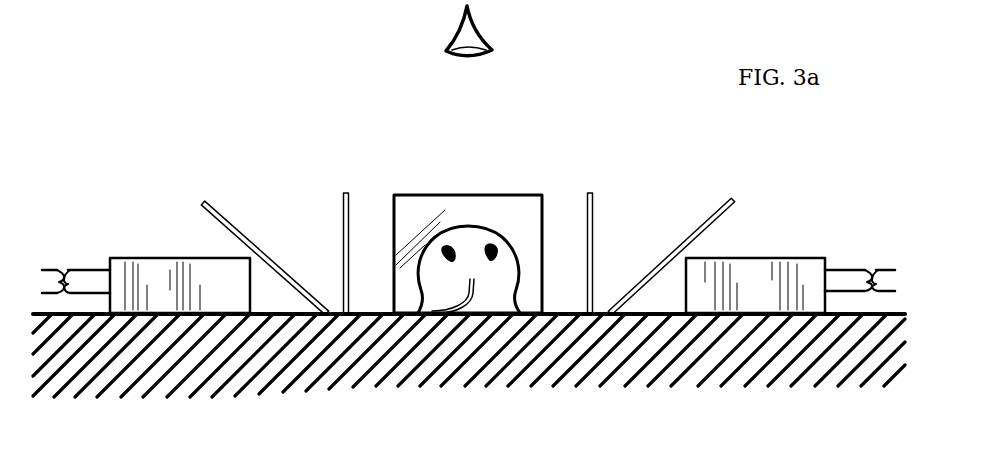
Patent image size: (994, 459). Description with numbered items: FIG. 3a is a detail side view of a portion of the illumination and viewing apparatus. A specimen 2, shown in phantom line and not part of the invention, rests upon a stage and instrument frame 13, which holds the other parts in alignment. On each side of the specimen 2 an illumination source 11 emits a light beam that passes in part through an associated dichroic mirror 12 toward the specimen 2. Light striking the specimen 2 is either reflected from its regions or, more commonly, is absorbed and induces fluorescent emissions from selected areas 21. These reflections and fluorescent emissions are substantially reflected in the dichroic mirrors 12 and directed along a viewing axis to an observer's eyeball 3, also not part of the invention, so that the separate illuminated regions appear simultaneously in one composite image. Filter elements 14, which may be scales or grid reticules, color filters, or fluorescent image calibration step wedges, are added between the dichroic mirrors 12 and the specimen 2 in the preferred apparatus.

The specimen 2 is at (489, 225).
The observer's eyeball 3 is at (463, 42).
The illumination source 11 is at (180, 258).
The dichroic mirror 12 is at (203, 203).
The stage and instrument frame 13 is at (562, 345).
The filter element 14 is at (346, 193).
The selected areas 21 is at (452, 250).